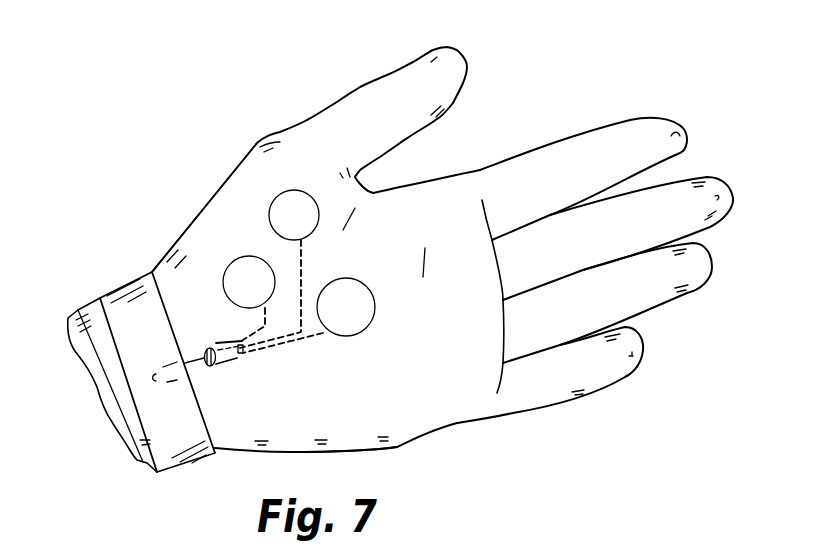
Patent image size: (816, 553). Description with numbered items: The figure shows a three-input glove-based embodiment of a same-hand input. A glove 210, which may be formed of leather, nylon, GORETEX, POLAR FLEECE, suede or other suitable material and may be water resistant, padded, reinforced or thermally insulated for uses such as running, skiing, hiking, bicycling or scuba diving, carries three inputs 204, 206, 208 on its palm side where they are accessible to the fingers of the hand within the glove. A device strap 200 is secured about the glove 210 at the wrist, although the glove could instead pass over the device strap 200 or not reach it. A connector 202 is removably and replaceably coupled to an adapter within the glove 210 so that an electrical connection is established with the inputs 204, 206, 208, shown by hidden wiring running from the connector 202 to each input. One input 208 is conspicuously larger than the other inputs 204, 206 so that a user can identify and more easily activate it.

The device strap 200 is at (160, 292).
The connector 202 is at (208, 349).
The input 204 is at (246, 257).
The input 206 is at (294, 190).
The input 208 is at (361, 283).
The glove 210 is at (399, 447).